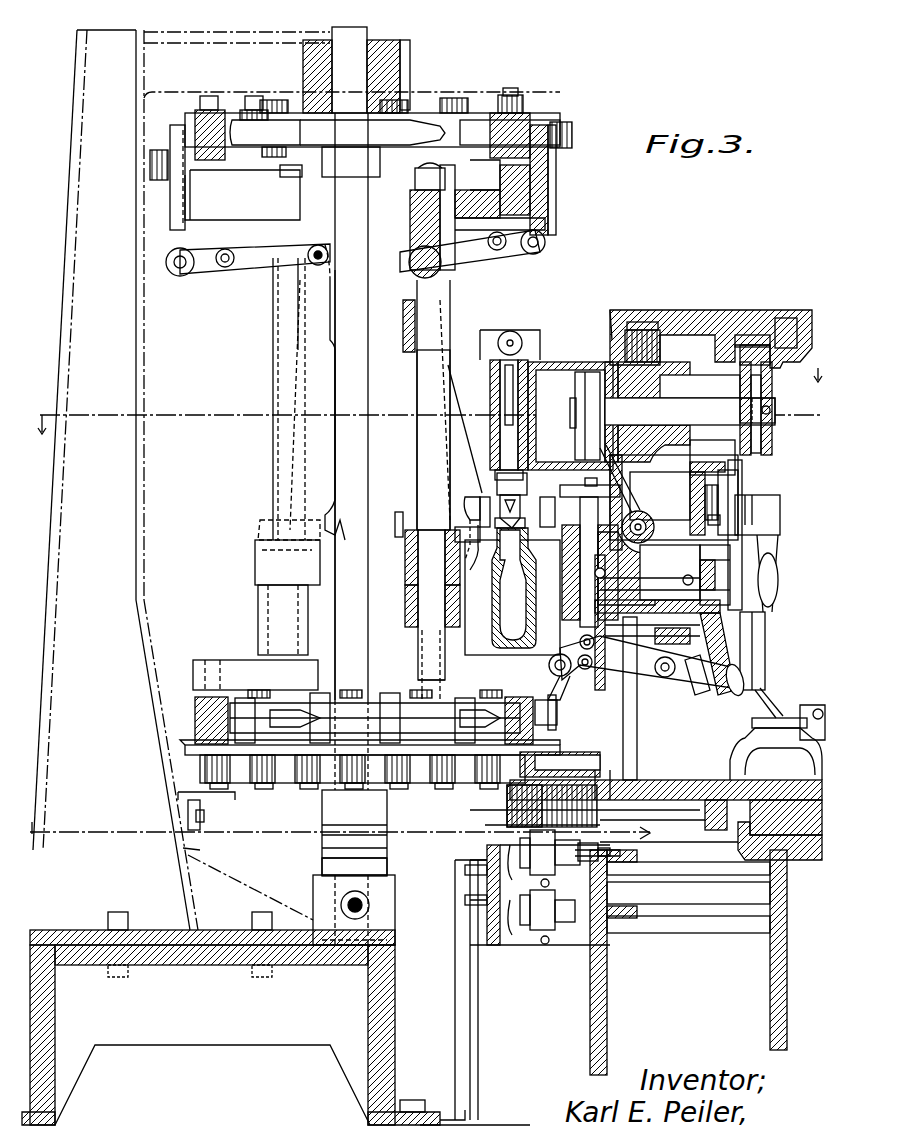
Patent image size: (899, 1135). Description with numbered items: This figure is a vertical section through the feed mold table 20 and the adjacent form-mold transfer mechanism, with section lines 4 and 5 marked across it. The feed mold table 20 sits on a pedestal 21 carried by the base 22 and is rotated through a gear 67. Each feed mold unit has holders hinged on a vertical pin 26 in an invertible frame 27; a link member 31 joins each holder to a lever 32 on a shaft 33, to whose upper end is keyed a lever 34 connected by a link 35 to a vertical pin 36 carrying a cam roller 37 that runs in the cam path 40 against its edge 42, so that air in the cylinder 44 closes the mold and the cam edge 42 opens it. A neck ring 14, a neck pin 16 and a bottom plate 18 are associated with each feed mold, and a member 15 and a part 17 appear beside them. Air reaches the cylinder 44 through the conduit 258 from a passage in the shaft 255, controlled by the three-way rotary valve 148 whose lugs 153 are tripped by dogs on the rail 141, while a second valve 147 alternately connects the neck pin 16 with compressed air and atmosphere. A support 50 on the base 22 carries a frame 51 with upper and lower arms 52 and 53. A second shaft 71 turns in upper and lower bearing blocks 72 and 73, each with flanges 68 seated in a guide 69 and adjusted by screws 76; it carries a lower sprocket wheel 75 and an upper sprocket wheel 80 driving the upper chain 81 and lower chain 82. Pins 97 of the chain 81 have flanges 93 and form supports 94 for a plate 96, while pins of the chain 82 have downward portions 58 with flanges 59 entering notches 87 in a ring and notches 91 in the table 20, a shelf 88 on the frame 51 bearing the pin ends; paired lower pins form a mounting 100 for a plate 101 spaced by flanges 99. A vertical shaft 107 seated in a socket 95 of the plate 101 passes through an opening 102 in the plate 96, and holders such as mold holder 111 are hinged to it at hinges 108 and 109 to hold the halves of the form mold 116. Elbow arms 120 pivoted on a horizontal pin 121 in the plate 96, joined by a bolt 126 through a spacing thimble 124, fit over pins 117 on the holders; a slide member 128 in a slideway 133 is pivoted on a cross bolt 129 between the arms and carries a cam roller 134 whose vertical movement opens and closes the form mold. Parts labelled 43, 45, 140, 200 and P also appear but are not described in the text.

The section line 4- 4 is at (425, 412).
The section line 5- 5 is at (345, 825).
The pulley/part P is at (612, 312).
The neck ring 14 is at (492, 500).
The block 15 is at (512, 484).
The neck pin 16 is at (500, 525).
The rod 17 is at (498, 412).
The bottom plate 18 is at (560, 712).
The feed mold table 20 is at (645, 790).
The pedestal 21 is at (772, 962).
The base 22 is at (500, 1125).
The vertical pin 26 is at (575, 498).
The invertible frame 27 is at (657, 667).
The link member 31 is at (660, 582).
The lever 32 is at (728, 598).
The shaft 33 is at (728, 568).
The lever 34 is at (700, 380).
The link 35 is at (772, 432).
The vertical pin 36 is at (762, 448).
The cam roller 37 is at (758, 345).
The cam path 40 is at (752, 335).
The cam edge 42 is at (735, 312).
The housing wall 43 is at (788, 318).
The cylinder 44 is at (570, 416).
The shaft 45 is at (776, 408).
The support 50 is at (185, 955).
The frame 51 is at (120, 430).
The upper arm 52 is at (215, 52).
The lower arm 53 is at (238, 878).
The downwardly extending pin portion 58 is at (500, 787).
The flange 59 is at (535, 746).
The gear 67 is at (510, 808).
The flanges 68 is at (370, 35).
The guide 69 is at (405, 48).
The second shaft 71 is at (372, 368).
The upper bearing block 72 is at (400, 62).
The lower bearing block 73 is at (322, 868).
The sprocket wheel 75 is at (290, 700).
The screws 76 is at (398, 905).
The sprocket wheel 80 is at (423, 128).
The endless chain 81 is at (525, 120).
The chain 82 is at (195, 712).
The notches 87 is at (262, 785).
The shelf 88 is at (200, 795).
The notches 91 is at (545, 762).
The flanges 93 is at (505, 167).
The support 94 is at (515, 180).
The socket 95 is at (445, 645).
The upper plate 96 is at (225, 196).
The pins 97 is at (510, 95).
The flanges 99 is at (555, 690).
The mounting 100 is at (535, 655).
The lower plate 101 is at (468, 660).
The opening 102 is at (425, 213).
The vertical shaft 107 is at (420, 428).
The hinge 108 is at (405, 565).
The hinge 109 is at (405, 600).
The mold holder 111 is at (285, 570).
The form mold 116 is at (262, 618).
The pin 117 is at (342, 538).
The elbow arm 120 is at (445, 265).
The horizontal pivot pin 121 is at (425, 248).
The spacing thimble 124 is at (242, 250).
The bolt 126 is at (225, 268).
The slide member 128 is at (176, 225).
The cross bolt 129 is at (175, 276).
The slideway 133 is at (556, 190).
The cam roller 134 is at (158, 150).
The rod 140 is at (480, 997).
The rail 141 is at (520, 855).
The valve 147 is at (532, 945).
The valve 148 is at (540, 850).
The lugs 153 is at (475, 870).
The spring 200 is at (648, 322).
The shaft 255 is at (645, 520).
The conduit 258 is at (632, 470).